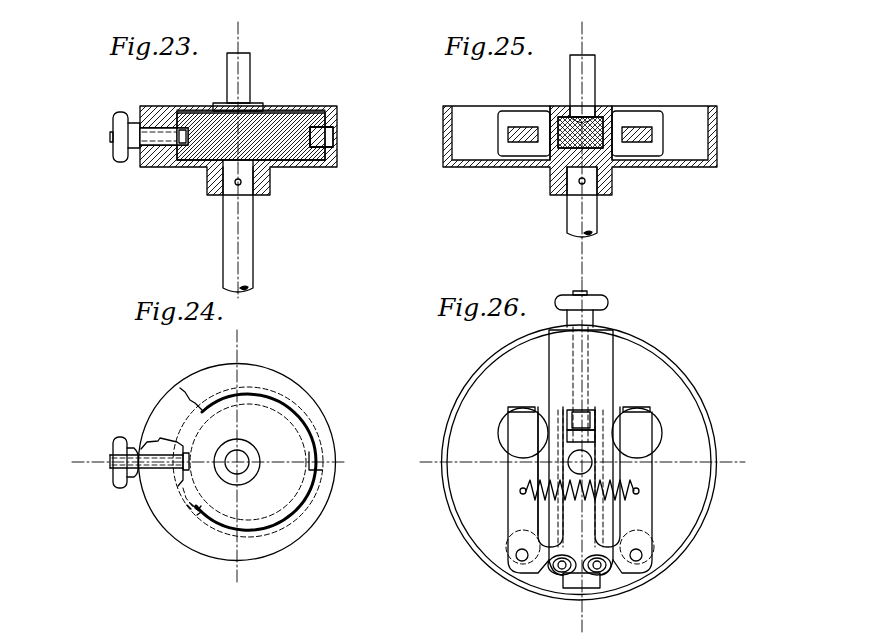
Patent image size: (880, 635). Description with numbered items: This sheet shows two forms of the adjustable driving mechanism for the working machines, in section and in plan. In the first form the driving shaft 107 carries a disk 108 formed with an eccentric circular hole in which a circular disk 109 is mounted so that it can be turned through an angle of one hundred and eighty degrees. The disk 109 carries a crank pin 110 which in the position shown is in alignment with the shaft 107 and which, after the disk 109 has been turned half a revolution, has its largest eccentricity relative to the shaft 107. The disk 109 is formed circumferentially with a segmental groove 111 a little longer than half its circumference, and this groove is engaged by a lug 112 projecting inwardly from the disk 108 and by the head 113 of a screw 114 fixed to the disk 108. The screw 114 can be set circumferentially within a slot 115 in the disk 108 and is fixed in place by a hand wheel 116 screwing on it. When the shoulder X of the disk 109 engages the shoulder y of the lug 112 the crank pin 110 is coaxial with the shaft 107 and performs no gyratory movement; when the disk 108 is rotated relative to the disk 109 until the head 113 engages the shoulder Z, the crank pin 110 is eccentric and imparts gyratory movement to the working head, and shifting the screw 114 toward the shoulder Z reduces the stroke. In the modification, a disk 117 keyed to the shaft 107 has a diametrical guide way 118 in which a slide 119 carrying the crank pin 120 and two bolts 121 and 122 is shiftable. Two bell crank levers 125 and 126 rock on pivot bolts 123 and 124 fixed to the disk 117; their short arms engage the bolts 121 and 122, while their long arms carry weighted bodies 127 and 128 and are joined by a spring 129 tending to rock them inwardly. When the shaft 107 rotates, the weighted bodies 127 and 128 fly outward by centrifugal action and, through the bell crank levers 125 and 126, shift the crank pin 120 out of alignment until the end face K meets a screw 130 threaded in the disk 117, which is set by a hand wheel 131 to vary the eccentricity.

In FIG. 23, the driving shaft 107 is at (243, 268).
In FIG. 25, the driving shaft 107 is at (580, 213).
In FIG. 23, the disk 108 is at (327, 167).
In FIG. 24, the disk 108 is at (193, 382).
In FIG. 23, the disk 109 is at (287, 118).
In FIG. 24, the disk 109 is at (290, 502).
In FIG. 23, the crank pin 110 is at (243, 82).
In FIG. 24, the crank pin 110 is at (245, 467).
In FIG. 23, the segmental groove 111 is at (317, 138).
In FIG. 24, the segmental groove 111 is at (307, 418).
In FIG. 24, the lug 112 is at (183, 500).
In FIG. 23, the head 113 is at (180, 117).
In FIG. 24, the head 113 is at (150, 432).
In FIG. 23, the screw 114 is at (165, 138).
In FIG. 24, the screw 114 is at (112, 467).
In FIG. 23, the slot 115 is at (327, 142).
In FIG. 24, the slot 115 is at (170, 422).
In FIG. 23, the hand wheel 116 is at (120, 130).
In FIG. 24, the hand wheel 116 is at (117, 442).
In FIG. 25, the disk 117 is at (715, 115).
In FIG. 26, the disk 117 is at (712, 480).
In FIG. 25, the diametrical guide way 118 is at (605, 107).
In FIG. 26, the diametrical guide way 118 is at (605, 417).
In FIG. 25, the slide 119 is at (560, 107).
In FIG. 26, the slide 119 is at (583, 527).
In FIG. 25, the crank pin 120 is at (587, 67).
In FIG. 26, the crank pin 120 is at (577, 462).
In FIG. 26, the bolt 121 is at (562, 567).
In FIG. 26, the bolt 122 is at (600, 565).
In FIG. 26, the pivot bolt 123 is at (517, 555).
In FIG. 26, the pivot bolt 124 is at (643, 560).
In FIG. 25, the bell crank lever 125 is at (525, 137).
In FIG. 26, the bell crank lever 125 is at (520, 530).
In FIG. 25, the bell crank lever 126 is at (633, 137).
In FIG. 26, the bell crank lever 126 is at (638, 528).
In FIG. 25, the weighted body 127 is at (507, 120).
In FIG. 26, the weighted body 127 is at (520, 437).
In FIG. 25, the weighted body 128 is at (647, 120).
In FIG. 26, the weighted body 128 is at (637, 440).
In FIG. 26, the spring 129 is at (627, 482).
In FIG. 26, the screw 130 is at (577, 423).
In FIG. 26, the hand wheel 131 is at (595, 302).
In FIG. 26, the end face K is at (590, 437).
In FIG. 24, the shoulder X is at (197, 515).
In FIG. 24, the shoulder y is at (187, 505).
In FIG. 24, the shoulder Z is at (323, 472).